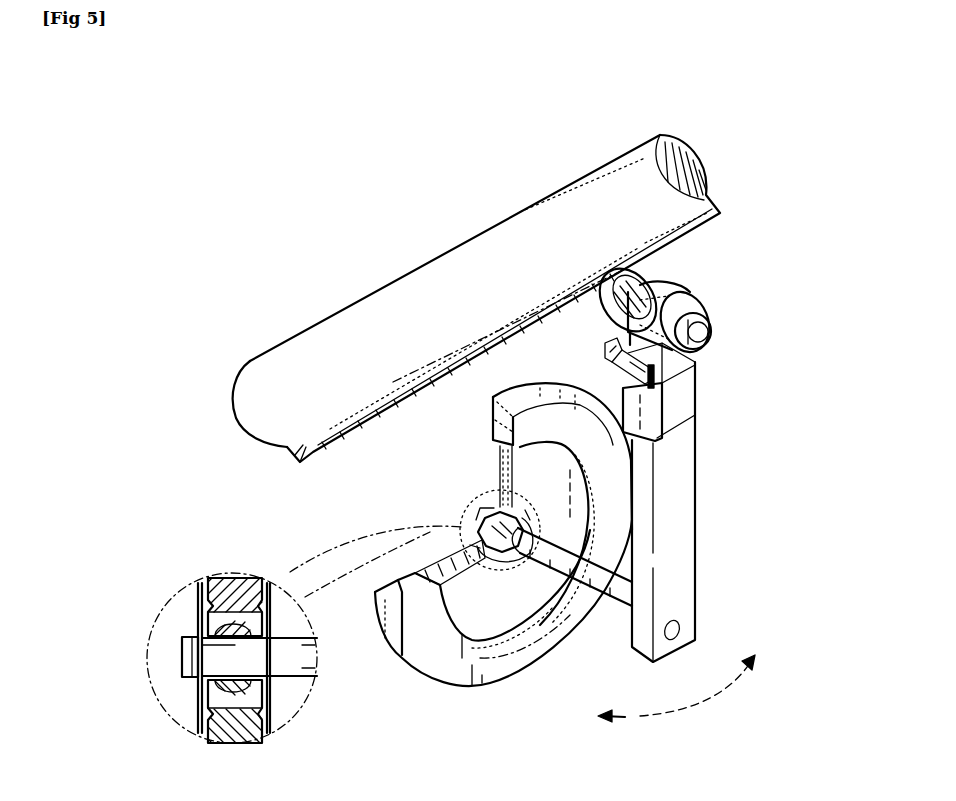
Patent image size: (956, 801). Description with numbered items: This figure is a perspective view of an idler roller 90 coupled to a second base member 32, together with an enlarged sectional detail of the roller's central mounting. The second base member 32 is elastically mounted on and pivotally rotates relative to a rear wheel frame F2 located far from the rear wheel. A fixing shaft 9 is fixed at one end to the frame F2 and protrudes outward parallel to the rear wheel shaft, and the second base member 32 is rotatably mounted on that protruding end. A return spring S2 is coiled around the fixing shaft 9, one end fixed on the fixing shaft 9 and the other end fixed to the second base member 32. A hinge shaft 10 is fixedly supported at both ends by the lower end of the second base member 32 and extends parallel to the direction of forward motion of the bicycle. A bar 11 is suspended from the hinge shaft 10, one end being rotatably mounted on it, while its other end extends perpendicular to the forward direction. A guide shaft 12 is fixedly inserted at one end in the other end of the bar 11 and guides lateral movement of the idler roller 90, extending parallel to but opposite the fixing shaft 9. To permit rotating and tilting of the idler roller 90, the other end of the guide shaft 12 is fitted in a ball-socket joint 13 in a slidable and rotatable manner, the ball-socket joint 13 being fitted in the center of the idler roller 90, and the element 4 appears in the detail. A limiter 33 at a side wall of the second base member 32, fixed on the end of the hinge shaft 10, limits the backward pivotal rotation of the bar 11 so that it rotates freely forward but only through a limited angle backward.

The rear wheel frame F2 is at (603, 267).
The return spring S2 is at (655, 273).
The second base member 32 is at (690, 288).
The fixing shaft 9 is at (715, 337).
The hinge shaft 10 is at (700, 368).
The limiter 33 is at (700, 411).
The bar 11 is at (670, 512).
The guide shaft 12 is at (598, 605).
The idler roller 90 is at (444, 690).
The bolt 4 is at (193, 630).
The ball-socket joint 13 is at (200, 677).